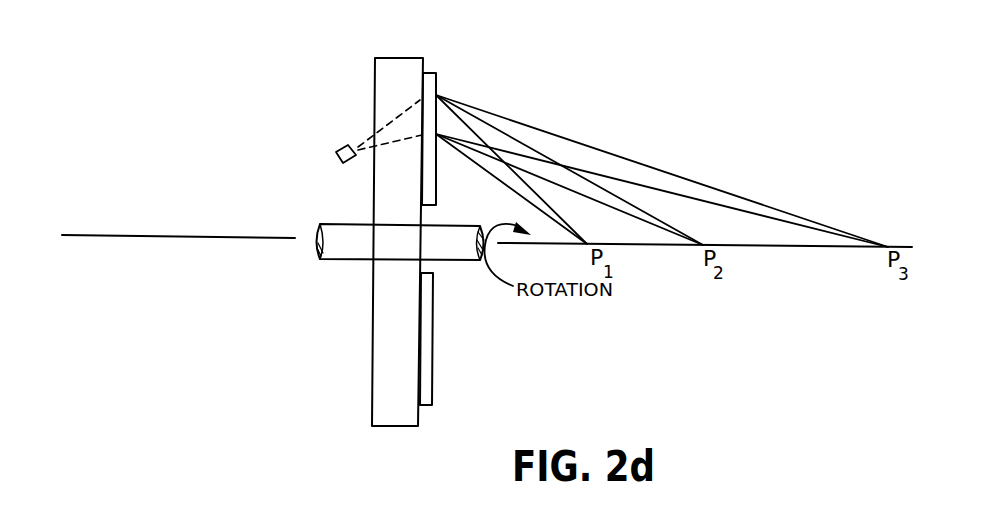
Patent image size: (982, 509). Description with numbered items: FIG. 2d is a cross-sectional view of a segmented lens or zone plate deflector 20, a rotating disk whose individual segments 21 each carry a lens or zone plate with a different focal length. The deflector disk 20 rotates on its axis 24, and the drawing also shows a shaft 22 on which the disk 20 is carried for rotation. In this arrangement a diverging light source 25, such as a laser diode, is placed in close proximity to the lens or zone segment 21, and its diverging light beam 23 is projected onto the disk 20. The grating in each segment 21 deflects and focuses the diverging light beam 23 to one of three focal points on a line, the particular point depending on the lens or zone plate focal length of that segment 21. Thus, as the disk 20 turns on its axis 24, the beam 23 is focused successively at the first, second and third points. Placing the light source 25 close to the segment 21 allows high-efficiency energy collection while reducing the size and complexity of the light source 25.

The segmented lens or zone plate deflector 20 is at (392, 57).
The segment 21 is at (437, 186).
The rotation shaft 22 is at (452, 261).
The light beam 23 is at (382, 126).
The axis 24 is at (100, 238).
The diverging light source 25 is at (341, 147).